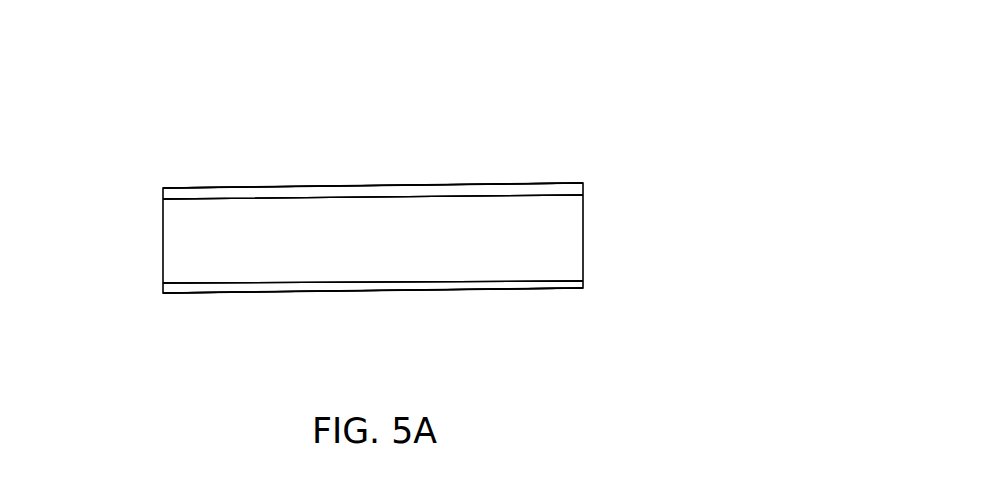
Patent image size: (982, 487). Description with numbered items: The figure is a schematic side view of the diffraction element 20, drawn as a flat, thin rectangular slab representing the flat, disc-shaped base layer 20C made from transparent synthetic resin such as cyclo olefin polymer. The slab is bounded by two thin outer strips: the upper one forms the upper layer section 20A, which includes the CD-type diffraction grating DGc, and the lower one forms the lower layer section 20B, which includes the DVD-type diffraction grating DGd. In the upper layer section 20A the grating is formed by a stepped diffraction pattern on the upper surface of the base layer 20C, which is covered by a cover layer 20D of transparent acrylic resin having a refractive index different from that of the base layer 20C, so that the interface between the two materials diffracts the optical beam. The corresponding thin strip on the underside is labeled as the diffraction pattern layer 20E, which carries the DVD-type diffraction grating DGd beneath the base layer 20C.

The diffraction element 20 is at (73, 61).
The upper layer section 20A is at (158, 193).
The lower layer section 20B is at (162, 288).
The base layer 20C is at (572, 236).
The cover layer 20D is at (540, 193).
The Diffraction Pattern Layer 20E is at (388, 284).
The CD-type diffraction grating DGc is at (337, 181).
The DVD-type diffraction grating DGd is at (337, 299).